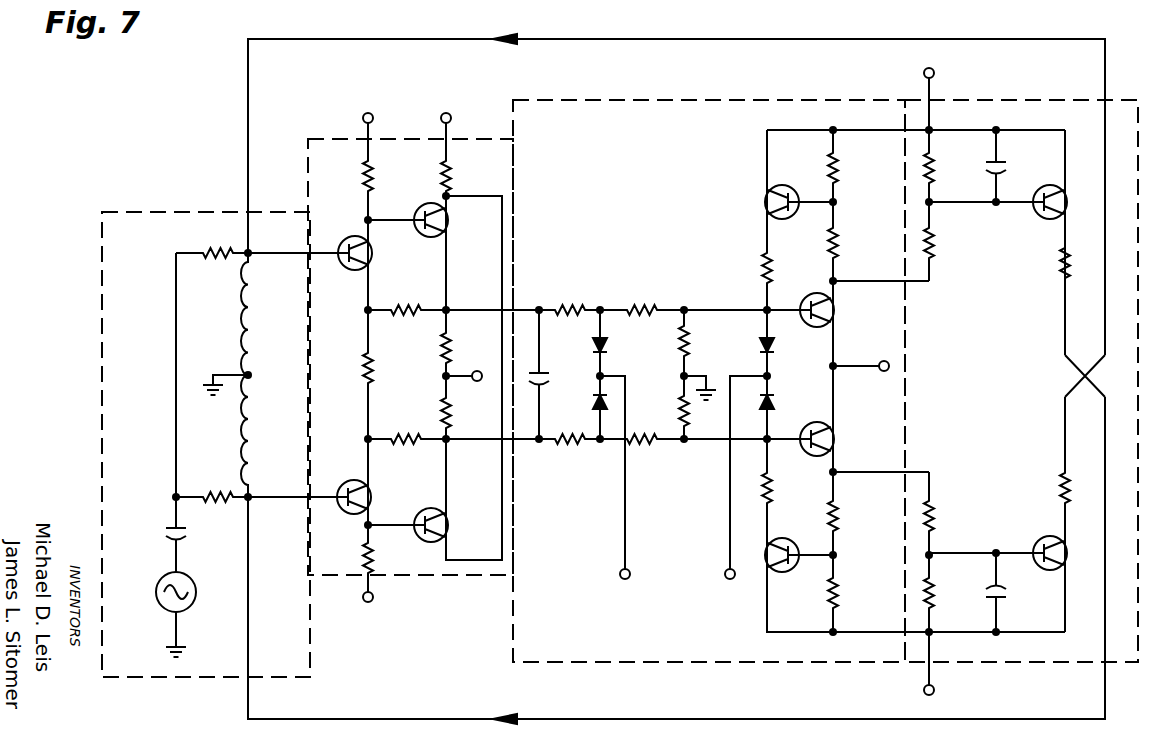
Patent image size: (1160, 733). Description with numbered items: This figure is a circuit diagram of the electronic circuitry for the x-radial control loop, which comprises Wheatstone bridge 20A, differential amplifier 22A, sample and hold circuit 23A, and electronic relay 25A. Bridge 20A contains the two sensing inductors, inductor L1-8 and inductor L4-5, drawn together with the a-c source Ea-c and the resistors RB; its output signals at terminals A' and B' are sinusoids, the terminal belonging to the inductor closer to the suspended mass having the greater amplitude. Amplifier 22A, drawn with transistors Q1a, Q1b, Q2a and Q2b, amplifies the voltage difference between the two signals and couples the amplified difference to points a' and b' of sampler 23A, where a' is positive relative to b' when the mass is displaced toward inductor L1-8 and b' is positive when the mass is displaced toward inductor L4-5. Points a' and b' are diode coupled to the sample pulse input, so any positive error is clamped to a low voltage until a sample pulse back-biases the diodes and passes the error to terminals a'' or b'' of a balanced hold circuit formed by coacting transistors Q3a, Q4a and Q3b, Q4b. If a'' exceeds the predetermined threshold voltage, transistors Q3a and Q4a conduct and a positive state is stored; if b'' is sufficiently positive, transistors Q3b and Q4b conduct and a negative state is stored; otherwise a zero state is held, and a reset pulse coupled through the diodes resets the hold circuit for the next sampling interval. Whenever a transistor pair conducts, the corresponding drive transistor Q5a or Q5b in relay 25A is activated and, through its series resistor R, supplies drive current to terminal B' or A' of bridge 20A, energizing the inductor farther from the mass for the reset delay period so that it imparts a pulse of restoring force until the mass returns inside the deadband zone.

The Wheatstone bridge 20A is at (206, 435).
The differential amplifier 22A is at (393, 357).
The sample and hold circuit 23A is at (789, 384).
The electronic relay 25A is at (1025, 372).
The transistor Q1a is at (310, 244).
The transistor Q1b is at (309, 508).
The transistor Q2a is at (451, 222).
The transistor Q2b is at (451, 528).
The transistor Q3a is at (820, 310).
The transistor Q3b is at (820, 441).
The transistor Q4a is at (785, 193).
The transistor Q4b is at (786, 546).
The drive transistor Q5a is at (1031, 206).
The drive transistor Q5b is at (1030, 551).
The base resistor RB is at (218, 367).
The inductor L1-8 is at (261, 314).
The inductor L4-5 is at (261, 436).
The a-c source Ea-c is at (162, 577).
The resistor R is at (1072, 375).